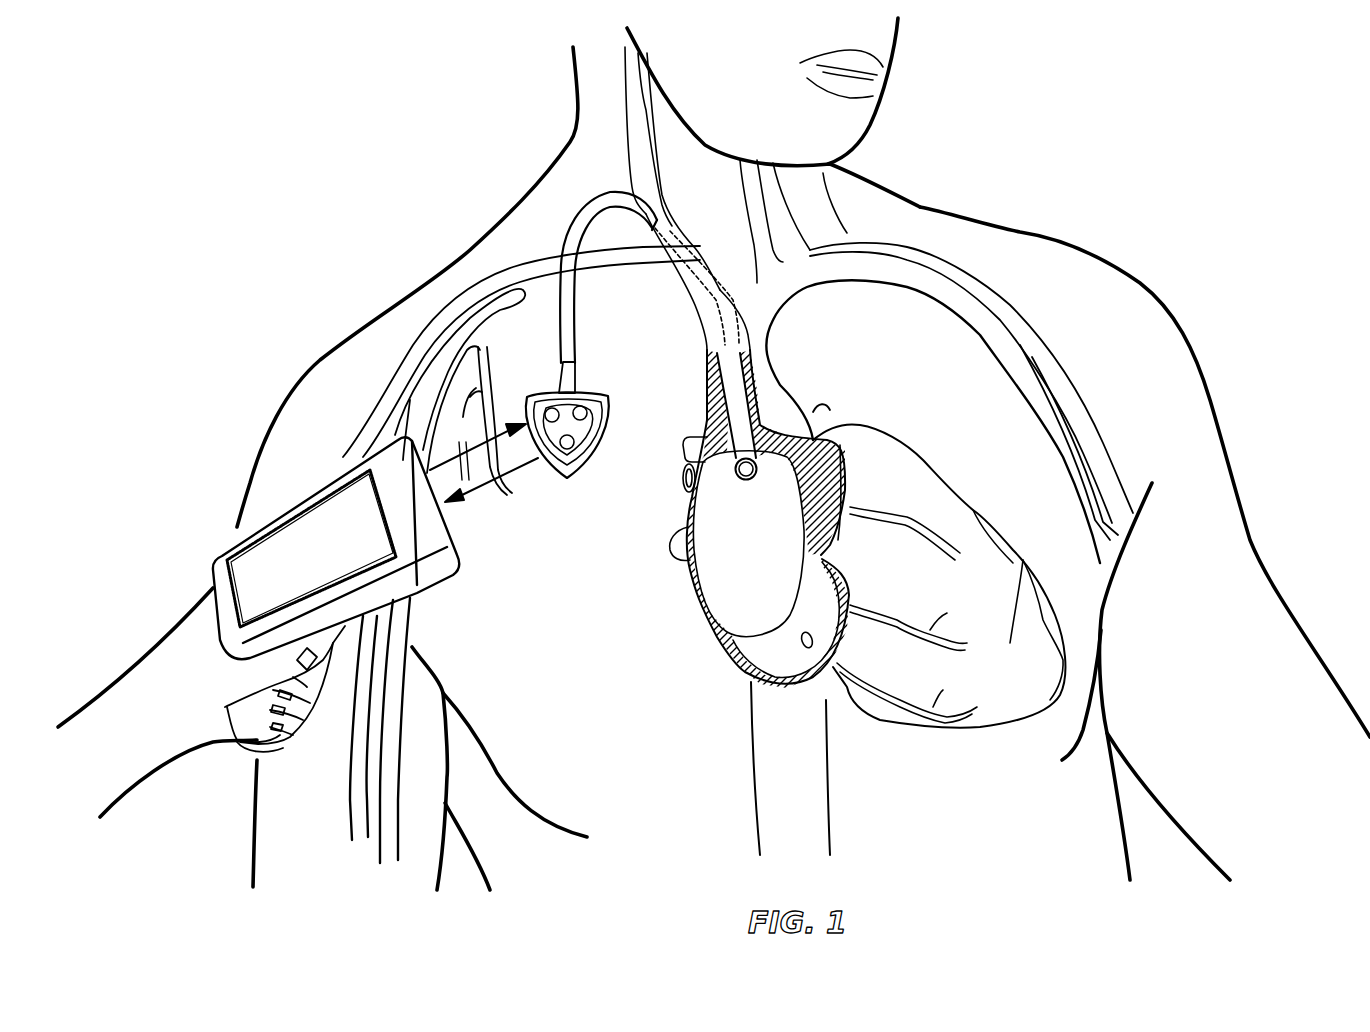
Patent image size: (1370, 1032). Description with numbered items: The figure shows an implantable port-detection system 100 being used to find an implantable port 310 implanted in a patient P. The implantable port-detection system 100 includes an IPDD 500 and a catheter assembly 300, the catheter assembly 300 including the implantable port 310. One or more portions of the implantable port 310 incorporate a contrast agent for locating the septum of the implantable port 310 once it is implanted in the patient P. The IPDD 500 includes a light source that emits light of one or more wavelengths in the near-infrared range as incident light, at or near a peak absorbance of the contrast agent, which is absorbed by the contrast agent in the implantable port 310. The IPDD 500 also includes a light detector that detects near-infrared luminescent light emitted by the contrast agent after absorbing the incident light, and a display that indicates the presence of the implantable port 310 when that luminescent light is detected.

The implantable port-detection system 100 is at (421, 275).
The catheter assembly 300 is at (591, 372).
The implantable port 310 is at (600, 453).
The IPDD 500 is at (276, 502).
The patient P is at (992, 170).